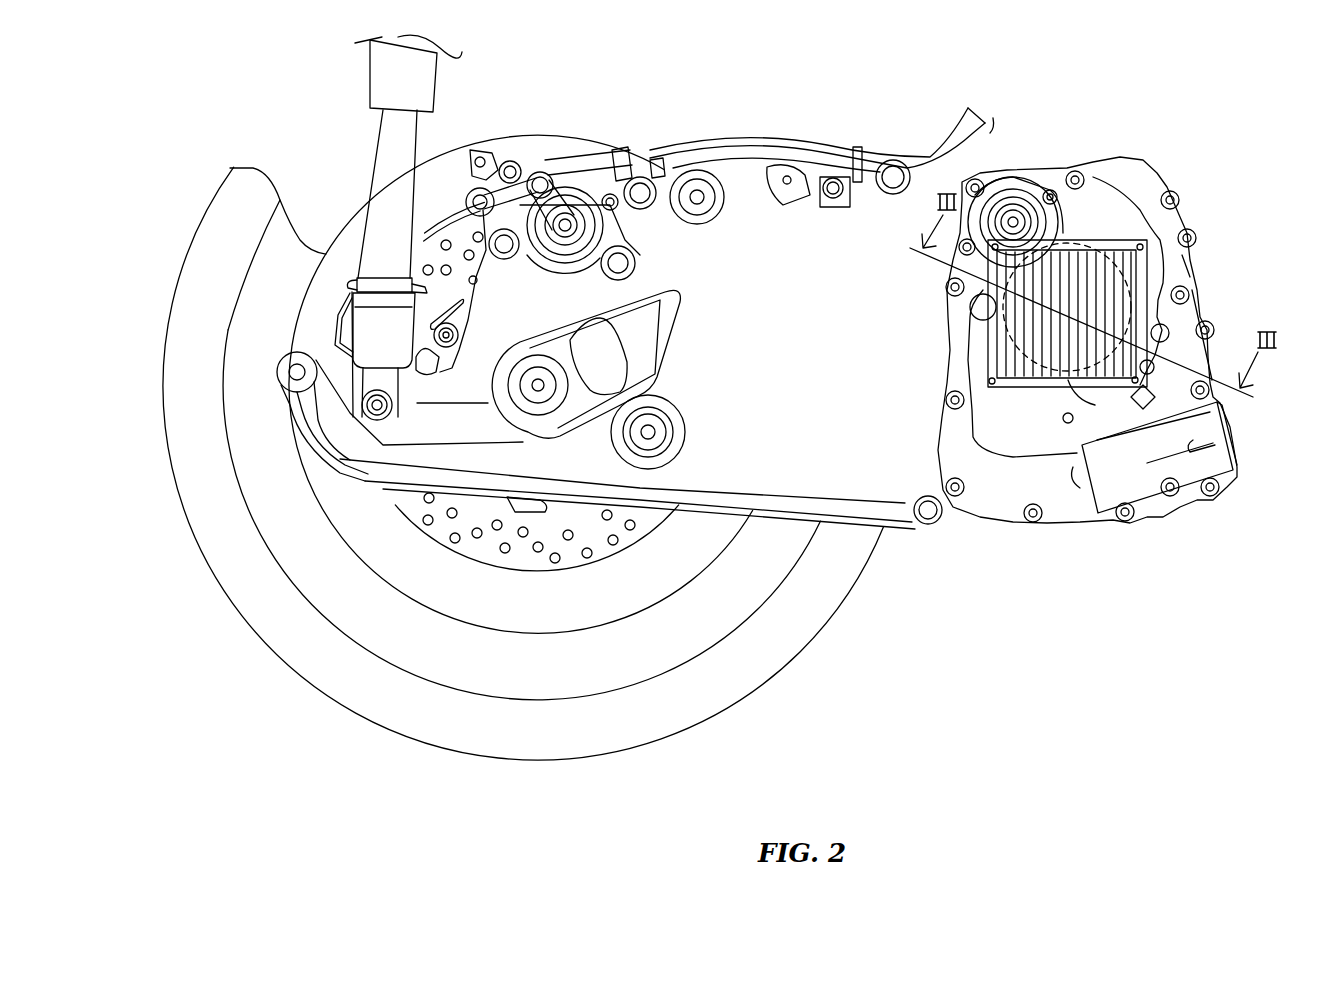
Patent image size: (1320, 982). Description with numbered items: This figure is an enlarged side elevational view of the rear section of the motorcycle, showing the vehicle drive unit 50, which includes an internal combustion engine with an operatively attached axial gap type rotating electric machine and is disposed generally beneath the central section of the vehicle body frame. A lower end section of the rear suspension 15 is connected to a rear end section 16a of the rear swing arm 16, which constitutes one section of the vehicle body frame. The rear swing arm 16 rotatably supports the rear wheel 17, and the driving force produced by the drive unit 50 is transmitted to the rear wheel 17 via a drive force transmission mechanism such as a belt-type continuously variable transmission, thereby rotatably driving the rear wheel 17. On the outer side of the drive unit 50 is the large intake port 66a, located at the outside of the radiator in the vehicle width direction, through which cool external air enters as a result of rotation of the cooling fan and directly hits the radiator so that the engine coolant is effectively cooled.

The rear suspension 15 is at (368, 98).
The rear swing arm 16 is at (858, 487).
The rear end section of rear swing arm 16a is at (388, 405).
The rear wheel 17 is at (782, 673).
The vehicle drive unit 50 is at (1130, 280).
The intake port 66a is at (1040, 385).